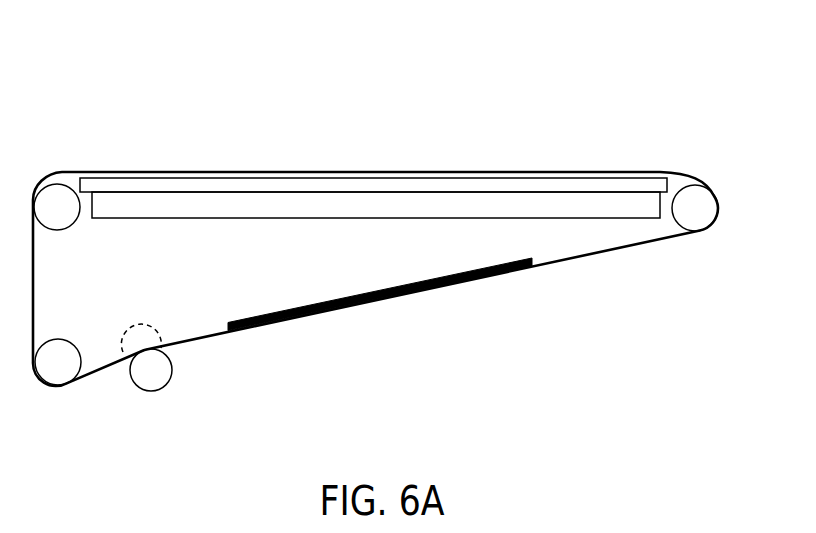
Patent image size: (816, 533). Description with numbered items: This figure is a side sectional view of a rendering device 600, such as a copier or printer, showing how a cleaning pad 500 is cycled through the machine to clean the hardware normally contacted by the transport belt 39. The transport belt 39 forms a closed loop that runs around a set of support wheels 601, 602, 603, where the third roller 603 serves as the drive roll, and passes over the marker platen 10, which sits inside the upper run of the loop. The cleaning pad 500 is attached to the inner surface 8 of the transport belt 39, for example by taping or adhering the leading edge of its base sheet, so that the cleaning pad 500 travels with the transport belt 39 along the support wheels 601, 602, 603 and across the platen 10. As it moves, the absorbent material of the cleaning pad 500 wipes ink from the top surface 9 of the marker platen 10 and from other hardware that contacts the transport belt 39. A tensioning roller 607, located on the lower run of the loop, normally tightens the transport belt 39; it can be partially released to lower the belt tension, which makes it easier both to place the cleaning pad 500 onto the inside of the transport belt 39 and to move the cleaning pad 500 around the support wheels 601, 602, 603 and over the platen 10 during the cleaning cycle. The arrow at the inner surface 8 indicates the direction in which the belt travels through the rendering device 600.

The rendering device 600 is at (371, 85).
The transport belt 39 is at (215, 173).
The marker platen 10 is at (427, 186).
The top surface 9 is at (370, 200).
The inner surface 8 is at (193, 317).
The cleaning pad 500 is at (387, 303).
The support wheel 601 is at (690, 202).
The second roller 602 is at (52, 193).
The third roller 603 is at (58, 375).
The tensioning roller 607 is at (162, 390).